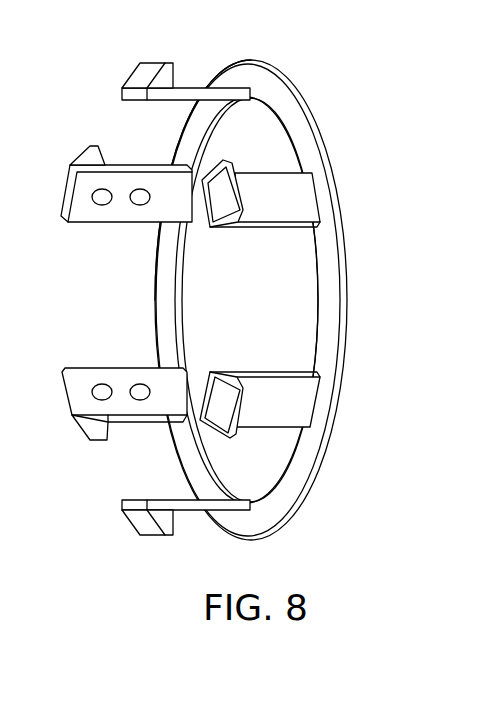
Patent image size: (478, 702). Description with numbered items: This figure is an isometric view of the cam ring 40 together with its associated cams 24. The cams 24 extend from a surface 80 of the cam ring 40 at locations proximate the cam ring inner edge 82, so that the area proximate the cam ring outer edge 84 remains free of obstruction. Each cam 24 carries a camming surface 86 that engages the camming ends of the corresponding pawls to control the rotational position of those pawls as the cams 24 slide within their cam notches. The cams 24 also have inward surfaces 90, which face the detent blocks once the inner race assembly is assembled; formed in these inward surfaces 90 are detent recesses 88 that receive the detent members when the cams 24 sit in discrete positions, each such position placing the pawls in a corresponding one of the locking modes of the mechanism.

The cam 24 is at (193, 88).
The cam ring 40 is at (270, 299).
The surface 80 is at (333, 298).
The cam ring inner edge 82 is at (180, 343).
The cam ring outer edge 84 is at (340, 228).
The camming surface 86 is at (143, 80).
The detent recess 88 is at (102, 190).
The inward surface 90 is at (133, 101).